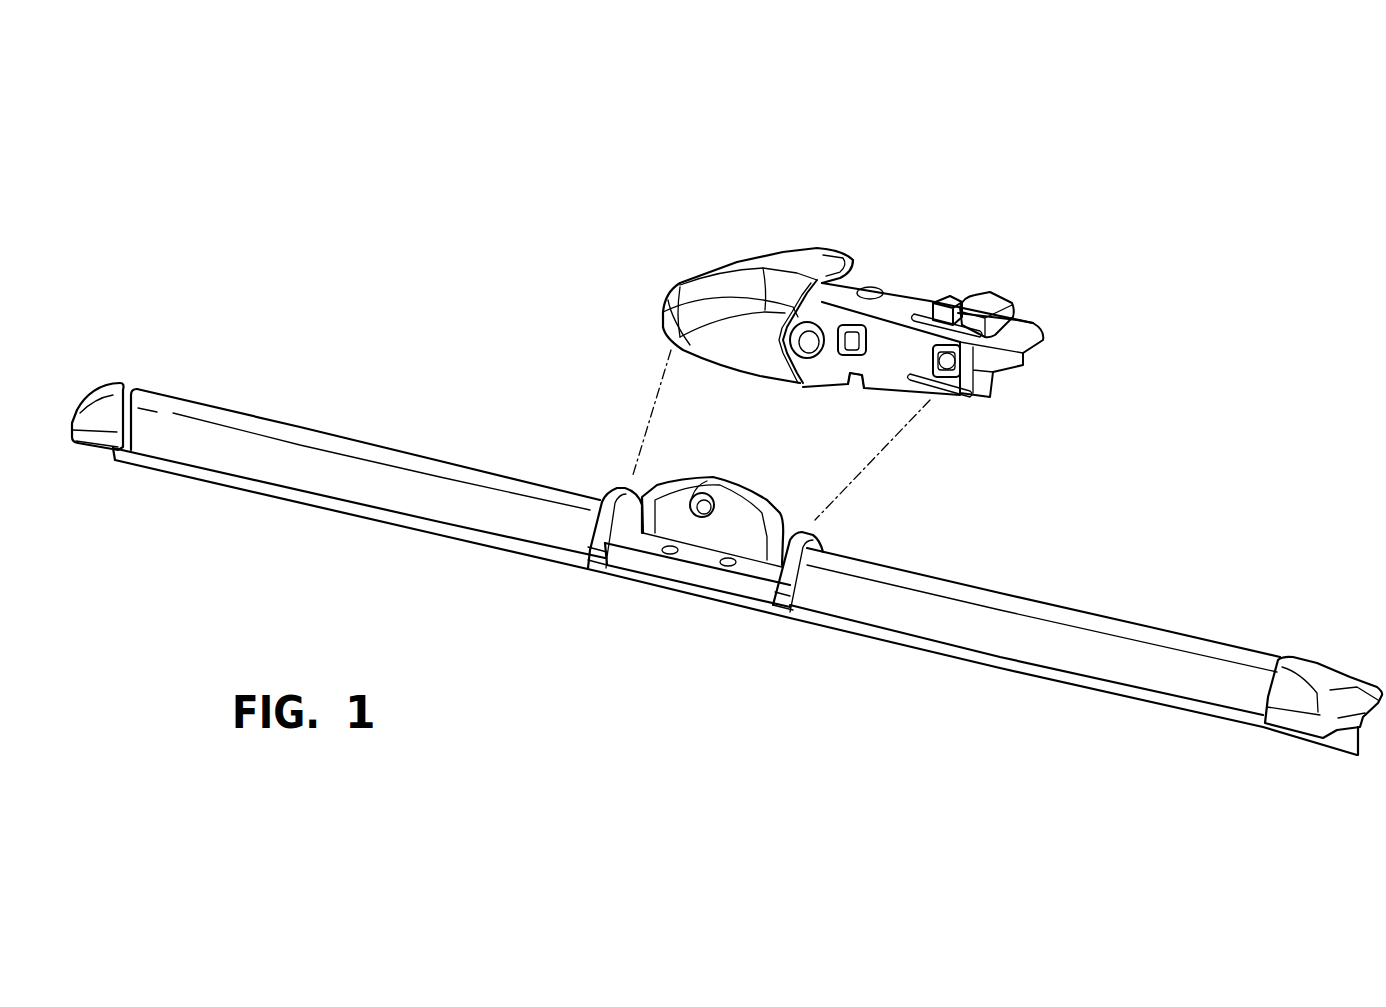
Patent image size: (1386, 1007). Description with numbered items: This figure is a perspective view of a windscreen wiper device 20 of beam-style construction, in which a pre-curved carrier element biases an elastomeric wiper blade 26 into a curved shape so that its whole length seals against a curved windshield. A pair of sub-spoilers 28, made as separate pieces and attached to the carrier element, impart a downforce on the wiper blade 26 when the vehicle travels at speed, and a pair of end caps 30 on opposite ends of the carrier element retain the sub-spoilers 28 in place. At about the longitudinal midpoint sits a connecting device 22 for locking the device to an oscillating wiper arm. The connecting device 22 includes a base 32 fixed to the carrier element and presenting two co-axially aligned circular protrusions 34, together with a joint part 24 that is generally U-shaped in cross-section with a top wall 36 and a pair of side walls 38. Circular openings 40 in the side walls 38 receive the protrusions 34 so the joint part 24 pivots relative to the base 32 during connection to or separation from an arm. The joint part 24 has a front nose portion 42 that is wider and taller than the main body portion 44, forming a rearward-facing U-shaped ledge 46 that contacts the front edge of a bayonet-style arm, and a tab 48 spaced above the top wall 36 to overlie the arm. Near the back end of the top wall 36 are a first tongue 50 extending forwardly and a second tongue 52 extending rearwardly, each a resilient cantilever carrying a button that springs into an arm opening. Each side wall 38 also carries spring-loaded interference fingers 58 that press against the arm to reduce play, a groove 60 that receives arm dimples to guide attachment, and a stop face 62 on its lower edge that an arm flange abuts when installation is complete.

The windscreen wiper device 20 is at (958, 152).
The connecting device 22 is at (876, 553).
The joint part 24 is at (750, 248).
The wiper blade 26 is at (870, 633).
The sub-spoilers 28 is at (405, 468).
The end caps 30 is at (122, 385).
The base 32 is at (697, 578).
The circular protrusions 34 is at (693, 503).
The top wall 36 is at (875, 281).
The side walls 38 is at (901, 357).
The circular openings 40 is at (803, 340).
The front nose portion 42 is at (698, 274).
The main body portion 44 is at (918, 264).
The U-shaped ledge 46 is at (662, 313).
The tab 48 is at (846, 260).
The first tongue 50 is at (997, 302).
The second tongue 52 is at (955, 296).
The interference fingers 58 is at (867, 347).
The groove 60 is at (977, 402).
The stop face 62 is at (858, 388).